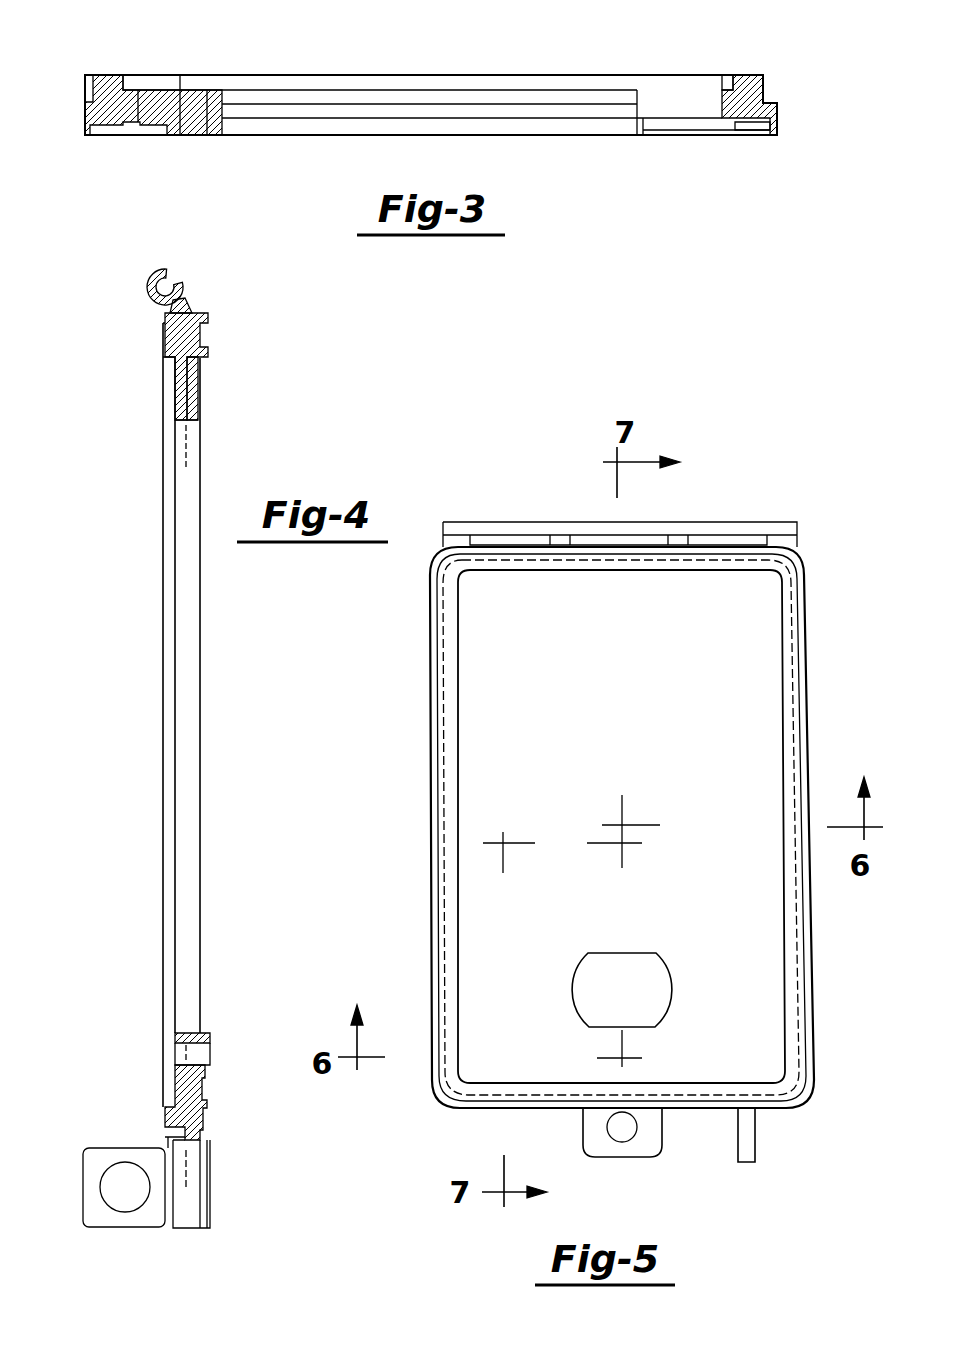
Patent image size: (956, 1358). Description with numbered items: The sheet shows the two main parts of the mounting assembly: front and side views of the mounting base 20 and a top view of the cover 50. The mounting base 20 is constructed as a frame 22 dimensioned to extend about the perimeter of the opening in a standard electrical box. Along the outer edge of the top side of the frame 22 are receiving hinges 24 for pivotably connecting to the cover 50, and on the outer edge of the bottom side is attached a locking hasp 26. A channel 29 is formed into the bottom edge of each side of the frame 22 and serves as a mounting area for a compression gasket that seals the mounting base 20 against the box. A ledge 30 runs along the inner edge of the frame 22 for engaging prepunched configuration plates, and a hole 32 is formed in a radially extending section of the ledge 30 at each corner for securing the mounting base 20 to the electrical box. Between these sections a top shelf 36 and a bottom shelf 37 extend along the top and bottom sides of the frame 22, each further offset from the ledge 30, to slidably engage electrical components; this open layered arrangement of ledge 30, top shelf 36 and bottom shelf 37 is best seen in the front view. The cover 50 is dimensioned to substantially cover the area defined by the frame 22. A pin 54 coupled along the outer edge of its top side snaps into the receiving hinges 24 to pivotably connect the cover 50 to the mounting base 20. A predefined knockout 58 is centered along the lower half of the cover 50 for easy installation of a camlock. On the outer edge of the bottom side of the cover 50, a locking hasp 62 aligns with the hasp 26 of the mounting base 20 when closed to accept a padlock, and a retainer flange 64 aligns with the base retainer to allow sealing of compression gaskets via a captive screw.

In FIG. 3, the mounting base 20 is at (551, 74).
In FIG. 4, the mounting base 20 is at (82, 372).
In FIG. 3, the frame 22 is at (747, 73).
In FIG. 4, the receiving hinge 24 is at (184, 275).
In FIG. 4, the locking hasp 26 is at (101, 1148).
In FIG. 3, the channel 29 is at (743, 137).
In FIG. 4, the channel 29 is at (208, 327).
In FIG. 3, the ledge 30 is at (133, 85).
In FIG. 4, the ledge 30 is at (175, 355).
In FIG. 3, the hole 32 is at (188, 135).
In FIG. 4, the hole 32 is at (200, 400).
In FIG. 4, the top shelf 36 is at (187, 404).
In FIG. 4, the bottom shelf 37 is at (164, 1073).
In FIG. 5, the cover 50 is at (431, 521).
In FIG. 5, the pin 54 is at (730, 522).
In FIG. 5, the predefined knockout 58 is at (633, 953).
In FIG. 5, the locking hasp 62 is at (755, 1155).
In FIG. 5, the retainer flange 64 is at (630, 1158).